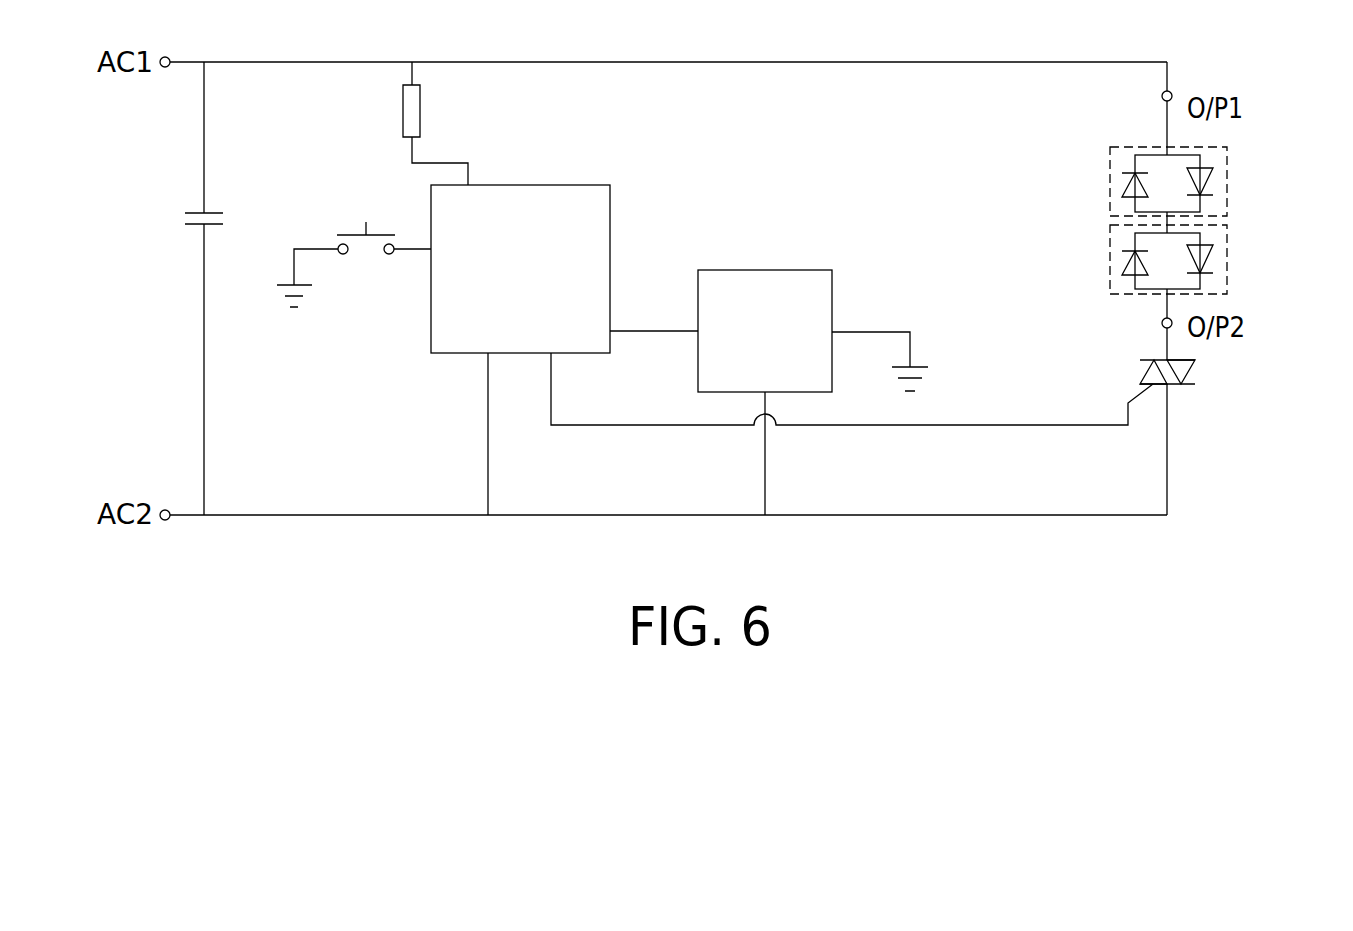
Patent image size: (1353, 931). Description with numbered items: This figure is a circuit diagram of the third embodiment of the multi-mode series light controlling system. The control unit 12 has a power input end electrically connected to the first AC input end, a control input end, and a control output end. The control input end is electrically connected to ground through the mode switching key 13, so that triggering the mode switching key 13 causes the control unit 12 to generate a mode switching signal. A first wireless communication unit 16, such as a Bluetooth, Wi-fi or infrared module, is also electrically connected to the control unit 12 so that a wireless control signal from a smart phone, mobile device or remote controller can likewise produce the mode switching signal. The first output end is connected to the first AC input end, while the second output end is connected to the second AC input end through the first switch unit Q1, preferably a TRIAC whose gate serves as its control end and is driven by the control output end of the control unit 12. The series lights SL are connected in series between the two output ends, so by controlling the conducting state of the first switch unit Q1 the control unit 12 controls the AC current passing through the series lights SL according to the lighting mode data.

The control unit 12 is at (578, 183).
The mode switching key 13 is at (348, 222).
The first wireless communication unit 16 is at (788, 270).
The series lights SL is at (1228, 182).
The first switch unit Q1 is at (1185, 437).